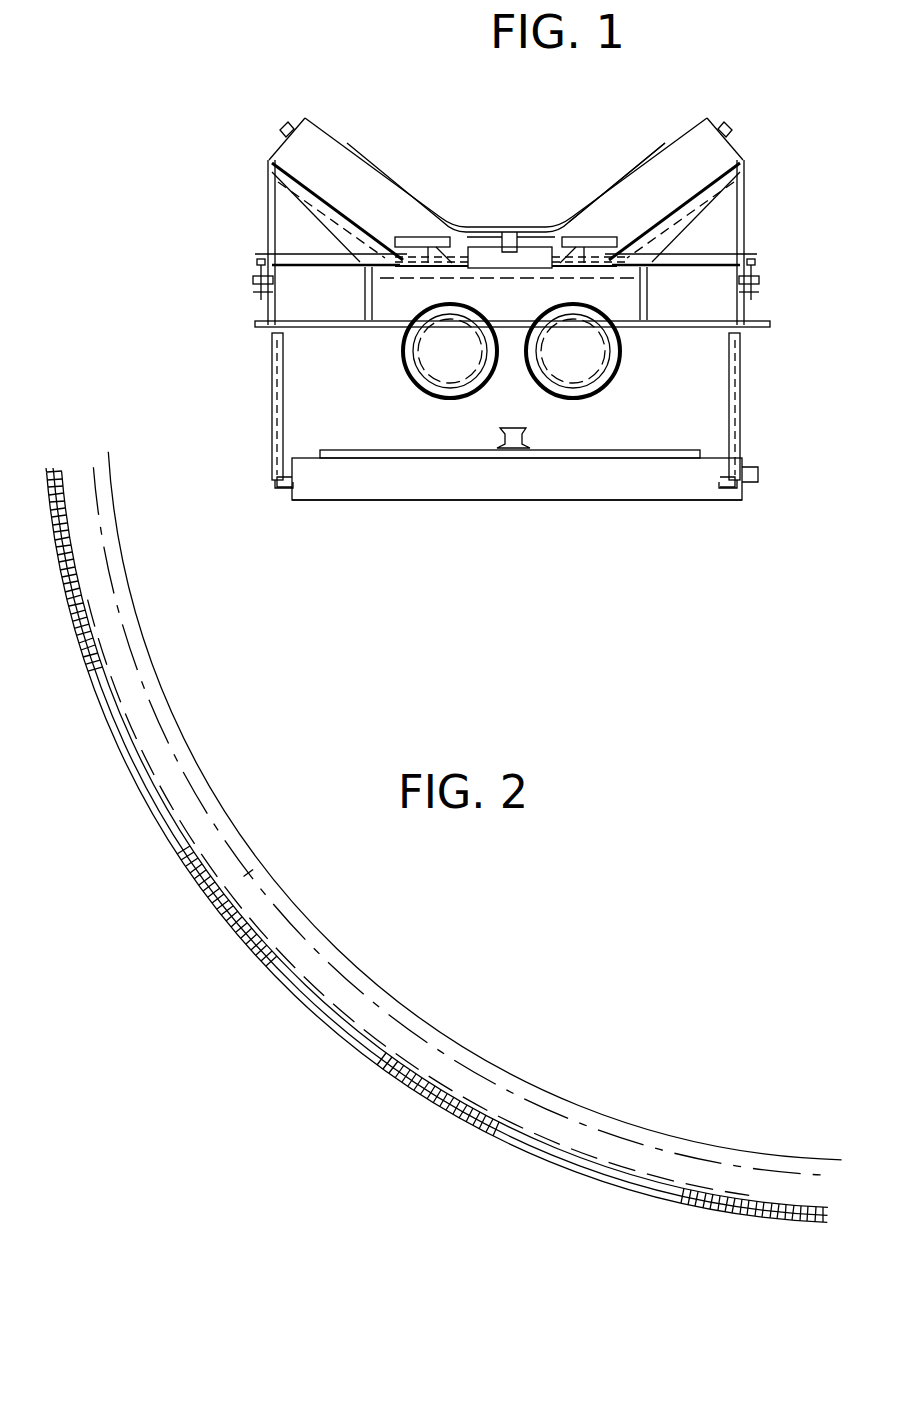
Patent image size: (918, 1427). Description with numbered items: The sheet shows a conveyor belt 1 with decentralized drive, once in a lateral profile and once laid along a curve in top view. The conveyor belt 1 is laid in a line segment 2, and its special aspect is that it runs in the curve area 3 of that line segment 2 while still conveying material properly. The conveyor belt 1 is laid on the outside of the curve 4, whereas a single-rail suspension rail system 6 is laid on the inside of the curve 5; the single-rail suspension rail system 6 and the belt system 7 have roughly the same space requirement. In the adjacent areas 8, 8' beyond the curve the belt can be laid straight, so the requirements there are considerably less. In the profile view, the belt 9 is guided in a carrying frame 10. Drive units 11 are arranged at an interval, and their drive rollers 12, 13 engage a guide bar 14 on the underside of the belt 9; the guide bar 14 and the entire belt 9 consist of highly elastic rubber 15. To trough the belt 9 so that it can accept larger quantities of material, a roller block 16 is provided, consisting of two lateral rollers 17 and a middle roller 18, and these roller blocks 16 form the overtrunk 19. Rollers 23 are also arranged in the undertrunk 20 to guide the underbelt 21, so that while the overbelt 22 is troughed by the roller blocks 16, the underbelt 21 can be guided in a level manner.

In FIG. 1, the conveyor belt 1 is at (409, 190).
In FIG. 2, the conveyor belt 1 is at (188, 853).
In FIG. 2, the line segment 2 is at (143, 722).
In FIG. 2, the curve area 3 is at (118, 775).
In FIG. 2, the outside of the curve 4 is at (98, 702).
In FIG. 2, the inside of curve 5 is at (218, 800).
In FIG. 2, the single-rail suspension rail system 6 is at (252, 870).
In FIG. 1, the belt system 7 is at (258, 220).
In FIG. 2, the belt system 7 is at (278, 962).
In FIG. 2, the adjacent area 8 is at (752, 1230).
In FIG. 2, the adjacent area 8' is at (77, 526).
In FIG. 1, the belt 9 is at (639, 152).
In FIG. 1, the overbelt 22 is at (652, 152).
In FIG. 1, the carrying frame 10 is at (768, 280).
In FIG. 1, the drive unit 11 is at (592, 367).
In FIG. 1, the drive roller 12 is at (407, 238).
In FIG. 1, the drive roller 13 is at (608, 235).
In FIG. 1, the guide bar 14 is at (512, 243).
In FIG. 1, the highly elastic rubber 15 is at (505, 227).
In FIG. 1, the roller block 16 is at (748, 167).
In FIG. 1, the lateral roller 17 is at (717, 162).
In FIG. 1, the middle roller 18 is at (478, 250).
In FIG. 1, the overtrunk 19 is at (646, 165).
In FIG. 1, the undertrunk 20 is at (718, 465).
In FIG. 1, the underbelt 21 is at (700, 447).
In FIG. 1, the rollers 23 is at (702, 483).